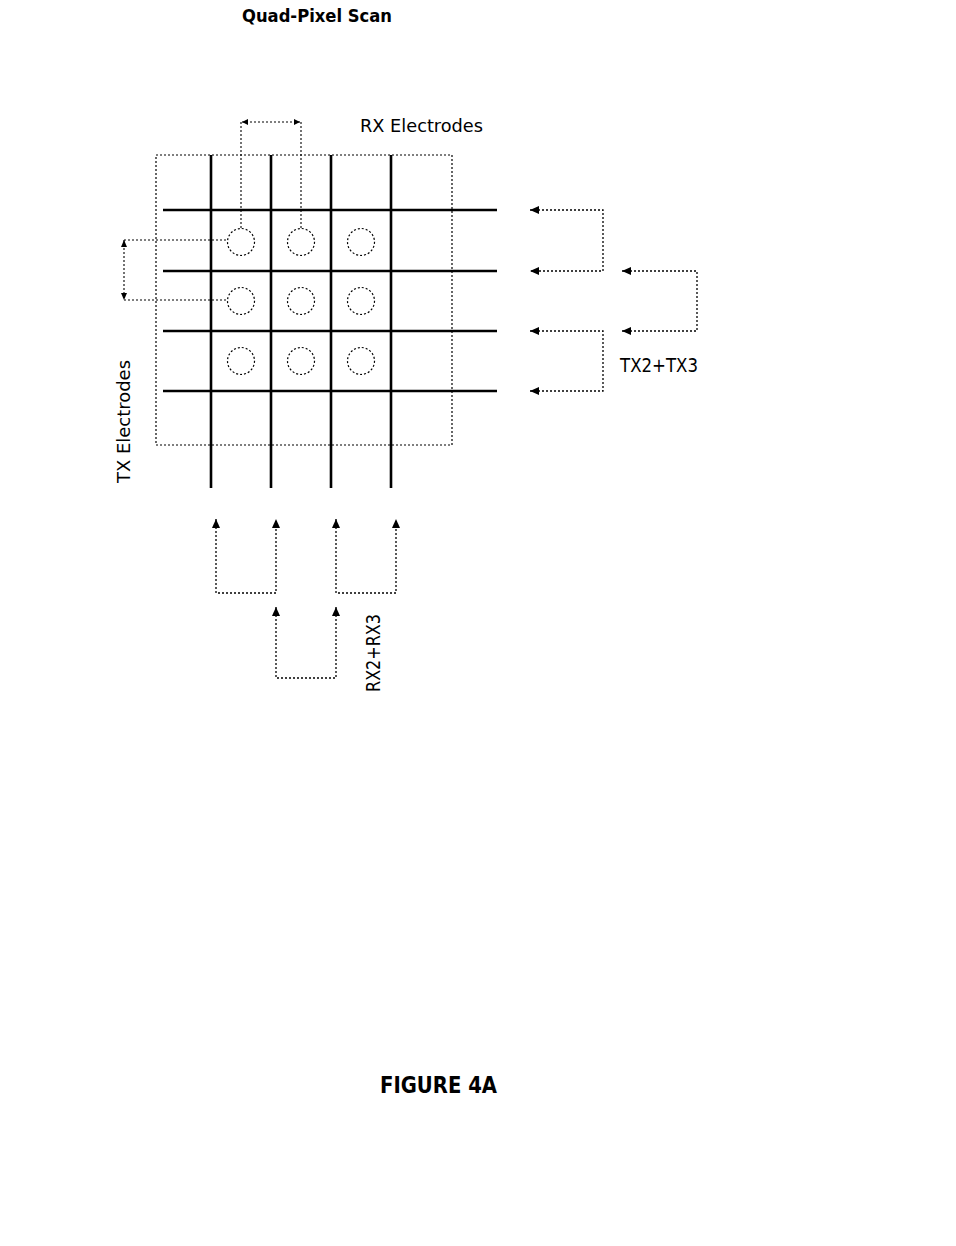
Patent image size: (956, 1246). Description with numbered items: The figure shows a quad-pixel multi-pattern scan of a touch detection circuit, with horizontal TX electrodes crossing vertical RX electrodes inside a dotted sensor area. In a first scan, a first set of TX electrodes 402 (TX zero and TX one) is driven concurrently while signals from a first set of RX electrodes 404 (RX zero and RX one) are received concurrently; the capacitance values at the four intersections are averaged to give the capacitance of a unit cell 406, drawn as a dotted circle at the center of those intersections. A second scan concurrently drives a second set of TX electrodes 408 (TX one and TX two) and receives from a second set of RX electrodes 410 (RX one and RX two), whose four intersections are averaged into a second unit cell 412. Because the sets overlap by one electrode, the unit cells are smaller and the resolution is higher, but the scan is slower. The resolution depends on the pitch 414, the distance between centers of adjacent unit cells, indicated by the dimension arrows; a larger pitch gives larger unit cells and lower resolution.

The first set of TX electrodes 402 is at (636, 240).
The first set of RX electrodes 404 is at (246, 621).
The unit cell 406 is at (224, 232).
The second set of TX electrodes 408 is at (726, 301).
The second set of RX electrodes 410 is at (306, 705).
The second unit cell 412 is at (280, 320).
The pitch 414 is at (267, 103).